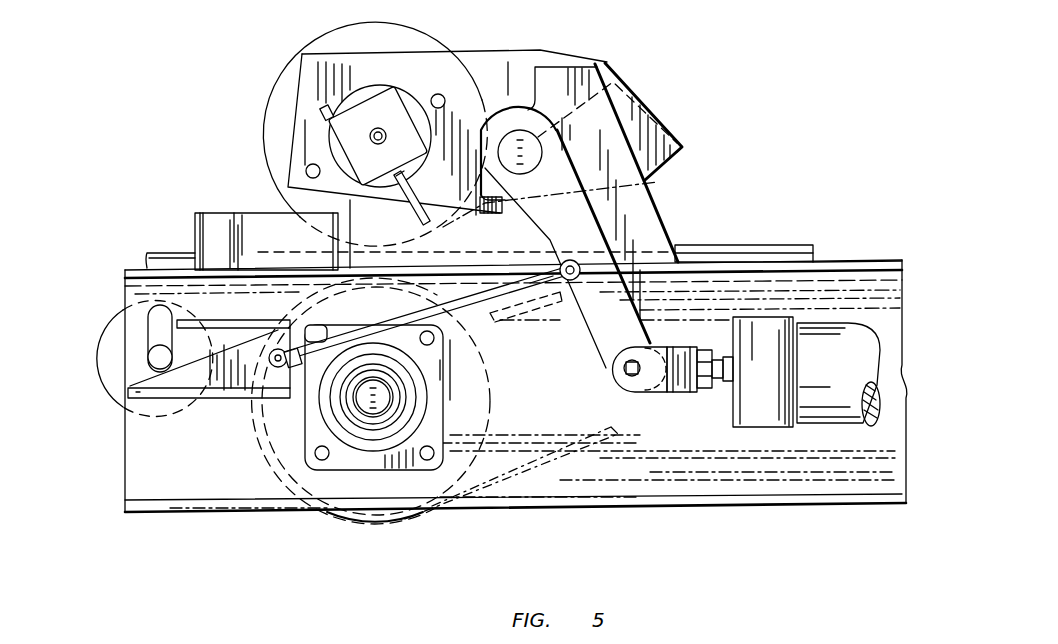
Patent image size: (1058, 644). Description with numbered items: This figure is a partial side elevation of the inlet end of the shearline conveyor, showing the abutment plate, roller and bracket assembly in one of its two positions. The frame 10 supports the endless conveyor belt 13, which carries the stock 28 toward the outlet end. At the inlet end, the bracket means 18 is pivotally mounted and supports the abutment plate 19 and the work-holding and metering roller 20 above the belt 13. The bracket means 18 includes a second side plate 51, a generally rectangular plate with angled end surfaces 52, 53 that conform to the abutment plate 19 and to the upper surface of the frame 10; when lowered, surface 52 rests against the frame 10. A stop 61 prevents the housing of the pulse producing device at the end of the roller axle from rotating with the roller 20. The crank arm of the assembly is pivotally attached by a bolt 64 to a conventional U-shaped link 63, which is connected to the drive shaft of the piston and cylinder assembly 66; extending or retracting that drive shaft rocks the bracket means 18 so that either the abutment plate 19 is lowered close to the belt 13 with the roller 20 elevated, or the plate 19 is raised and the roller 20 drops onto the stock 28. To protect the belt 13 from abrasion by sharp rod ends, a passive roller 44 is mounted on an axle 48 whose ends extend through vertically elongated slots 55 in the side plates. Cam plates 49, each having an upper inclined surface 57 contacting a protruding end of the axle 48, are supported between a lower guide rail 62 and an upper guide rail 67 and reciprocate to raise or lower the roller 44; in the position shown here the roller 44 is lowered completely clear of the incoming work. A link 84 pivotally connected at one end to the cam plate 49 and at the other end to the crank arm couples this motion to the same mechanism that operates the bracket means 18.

The frame 10 is at (770, 507).
The conveyor belt 13 is at (405, 521).
The bracket means 18 is at (519, 50).
The abutment plate 19 is at (657, 181).
The work-holding and metering roller 20 is at (275, 90).
The stock 28 is at (765, 245).
The passive roller 44 is at (104, 333).
The axle 48 is at (148, 360).
The cam plates 49 is at (130, 388).
The second side plate 51 is at (507, 50).
The angled end surface 52 is at (683, 150).
The angled end surface 53 is at (662, 120).
The vertically elongated slots 55 is at (152, 322).
The upper inclined surface 57 is at (196, 318).
The stop 61 is at (322, 110).
The lower guide rail 62 is at (228, 400).
The U-shaped link 63 is at (648, 395).
The bolt 64 is at (610, 373).
The piston and cylinder assembly 66 is at (812, 425).
The upper guide rail 67 is at (240, 322).
The link 84 is at (481, 320).